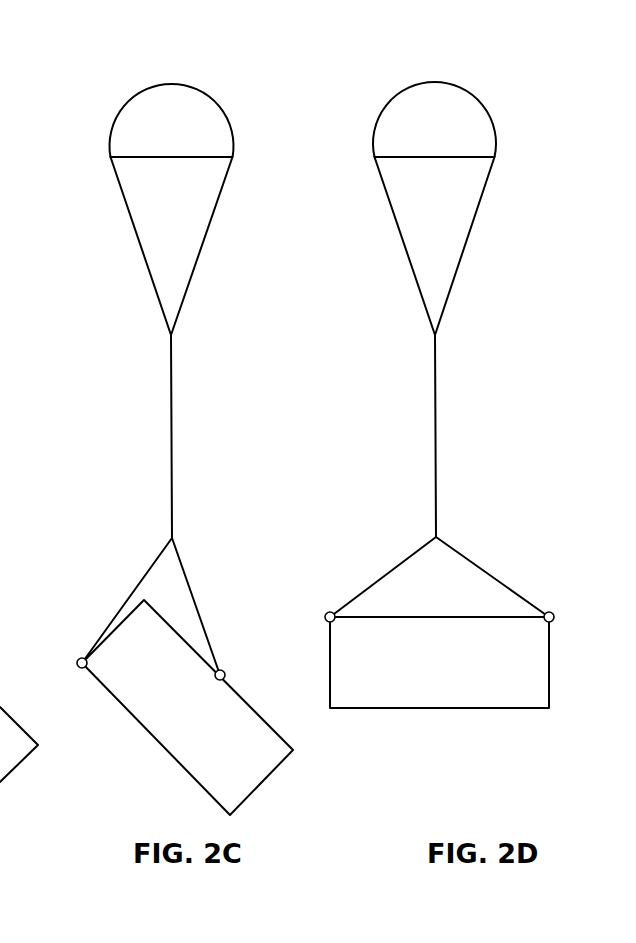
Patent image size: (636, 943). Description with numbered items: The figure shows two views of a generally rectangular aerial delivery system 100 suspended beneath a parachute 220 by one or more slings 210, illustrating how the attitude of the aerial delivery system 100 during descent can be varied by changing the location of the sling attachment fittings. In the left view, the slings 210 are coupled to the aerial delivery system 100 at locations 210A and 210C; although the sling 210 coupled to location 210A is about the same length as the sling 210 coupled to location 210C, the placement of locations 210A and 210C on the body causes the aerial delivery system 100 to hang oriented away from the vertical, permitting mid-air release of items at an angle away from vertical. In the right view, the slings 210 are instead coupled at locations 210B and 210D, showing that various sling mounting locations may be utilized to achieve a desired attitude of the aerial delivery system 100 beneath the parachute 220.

In FIG. 2C, the parachute 220 is at (218, 102).
In FIG. 2D, the parachute 220 is at (483, 103).
In FIG. 2C, the slings 210 is at (181, 565).
In FIG. 2D, the slings 210 is at (465, 562).
In FIG. 2C, the sling attachment location 210A is at (76, 660).
In FIG. 2D, the sling attachment location 210B is at (326, 613).
In FIG. 2C, the sling attachment location 210C is at (226, 668).
In FIG. 2D, the sling attachment location 210D is at (553, 608).
In FIG. 2C, the aerial delivery system 100 is at (143, 730).
In FIG. 2D, the aerial delivery system 100 is at (550, 662).